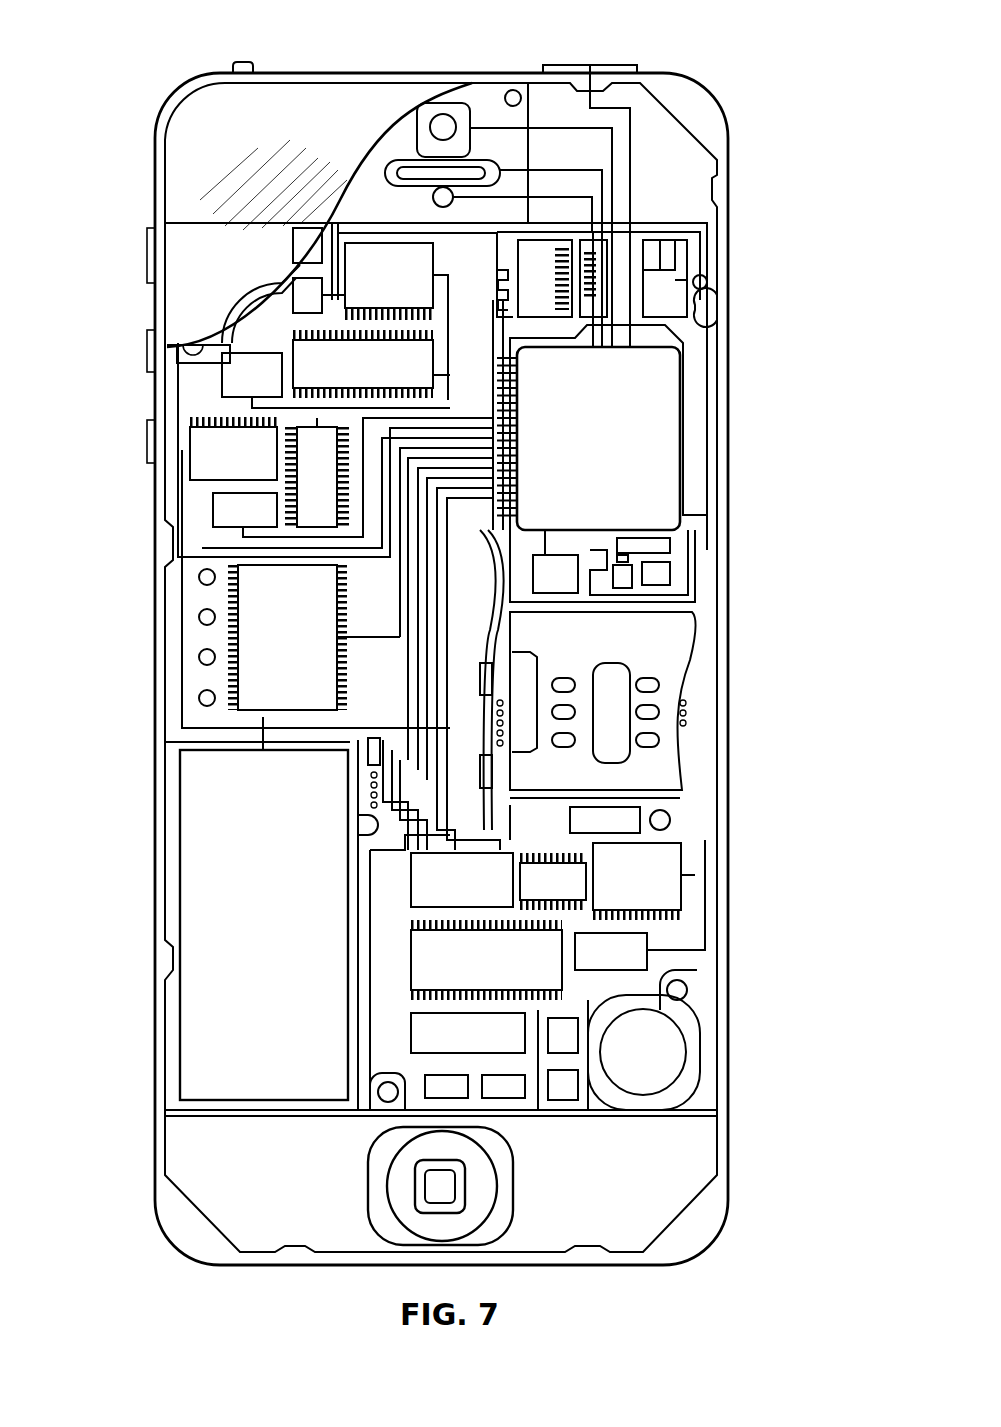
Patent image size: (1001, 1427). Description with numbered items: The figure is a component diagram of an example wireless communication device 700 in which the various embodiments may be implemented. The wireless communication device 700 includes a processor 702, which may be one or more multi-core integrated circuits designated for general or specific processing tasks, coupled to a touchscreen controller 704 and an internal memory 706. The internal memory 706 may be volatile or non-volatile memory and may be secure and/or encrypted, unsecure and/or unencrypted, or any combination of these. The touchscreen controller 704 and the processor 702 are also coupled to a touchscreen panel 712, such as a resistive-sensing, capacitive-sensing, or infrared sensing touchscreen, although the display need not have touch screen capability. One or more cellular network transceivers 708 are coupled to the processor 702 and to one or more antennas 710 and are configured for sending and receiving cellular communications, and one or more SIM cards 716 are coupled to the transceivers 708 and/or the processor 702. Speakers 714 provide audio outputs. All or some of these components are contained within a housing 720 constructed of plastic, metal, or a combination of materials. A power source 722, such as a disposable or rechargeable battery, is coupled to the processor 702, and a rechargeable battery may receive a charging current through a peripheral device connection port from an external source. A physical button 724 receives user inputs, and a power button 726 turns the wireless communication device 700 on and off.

The wireless communication device 700 is at (108, 60).
The processor 702 is at (607, 391).
The touchscreen controller 704 is at (422, 311).
The internal memory 706 is at (299, 637).
The cellular network transceiver 708 is at (620, 258).
The antenna 710 is at (665, 292).
The touchscreen panel 712 is at (198, 172).
The speaker 714 is at (392, 153).
The SIM card 716 is at (620, 820).
The housing 720 is at (730, 1147).
The power source 722 is at (264, 925).
The physical button 724 is at (445, 1200).
The power button 726 is at (598, 71).